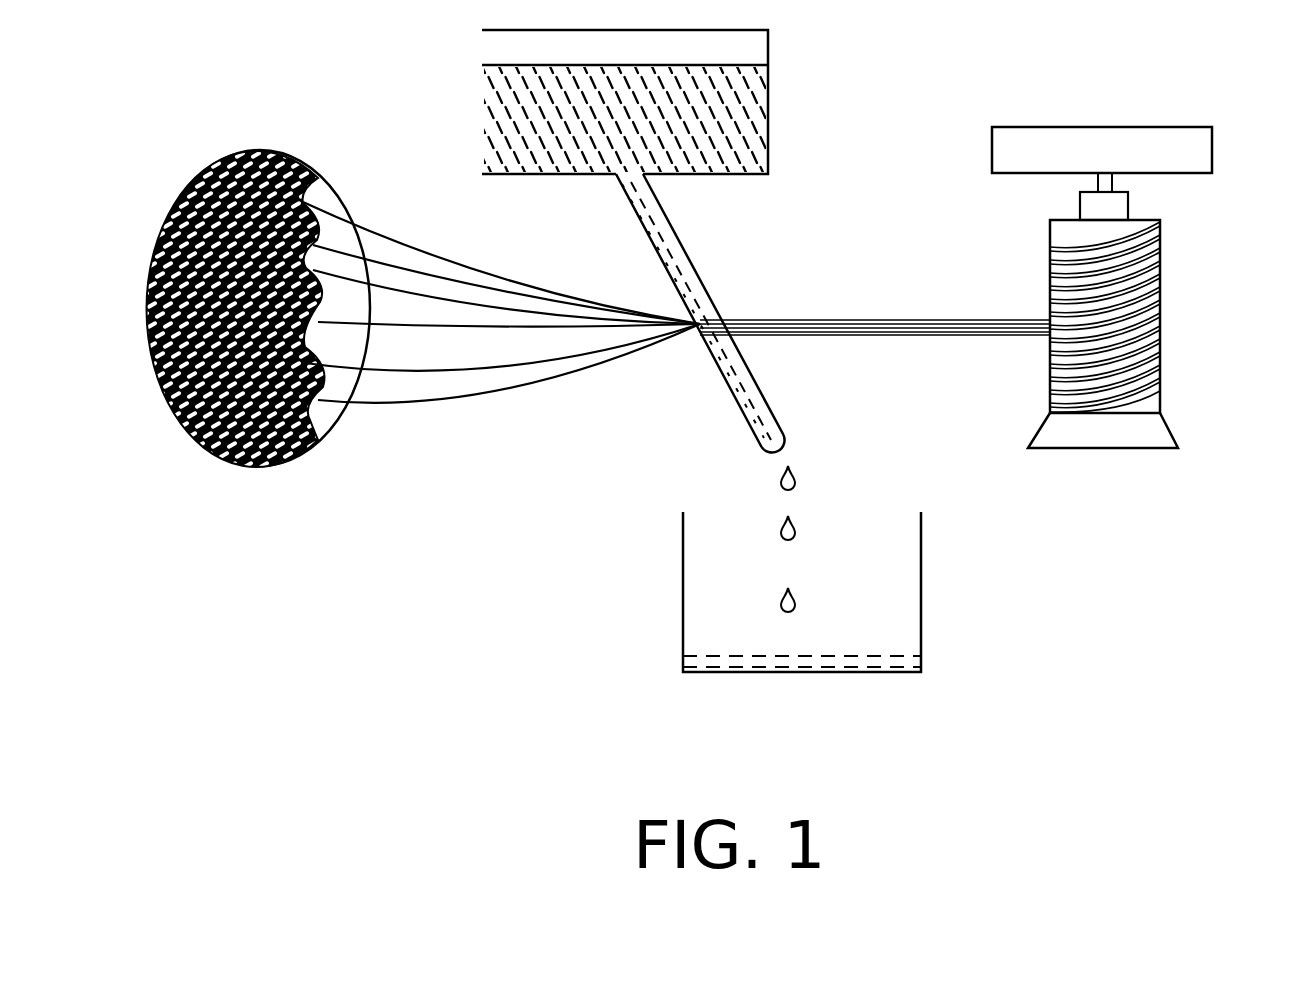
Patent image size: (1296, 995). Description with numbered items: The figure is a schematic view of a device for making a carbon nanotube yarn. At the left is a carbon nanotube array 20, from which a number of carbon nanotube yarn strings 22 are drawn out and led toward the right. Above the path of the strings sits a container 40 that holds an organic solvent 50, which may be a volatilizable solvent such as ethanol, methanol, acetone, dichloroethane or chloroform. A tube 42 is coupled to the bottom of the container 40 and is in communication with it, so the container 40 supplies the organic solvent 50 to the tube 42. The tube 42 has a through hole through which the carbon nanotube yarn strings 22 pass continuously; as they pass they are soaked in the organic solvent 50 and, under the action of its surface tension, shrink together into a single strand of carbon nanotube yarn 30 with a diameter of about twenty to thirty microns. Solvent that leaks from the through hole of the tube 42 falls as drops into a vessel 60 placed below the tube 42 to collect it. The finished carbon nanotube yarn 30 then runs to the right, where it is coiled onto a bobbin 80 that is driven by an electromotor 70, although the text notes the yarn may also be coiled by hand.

The carbon nanotube array 20 is at (180, 217).
The carbon nanotube yarn strings 22 is at (397, 402).
The carbon nanotube yarn 30 is at (907, 318).
The container 40 is at (775, 105).
The tube 42 is at (700, 277).
The organic solvent 50 is at (520, 115).
The vessel 60 is at (935, 585).
The electromotor 70 is at (1188, 133).
The bobbin 80 is at (1067, 238).